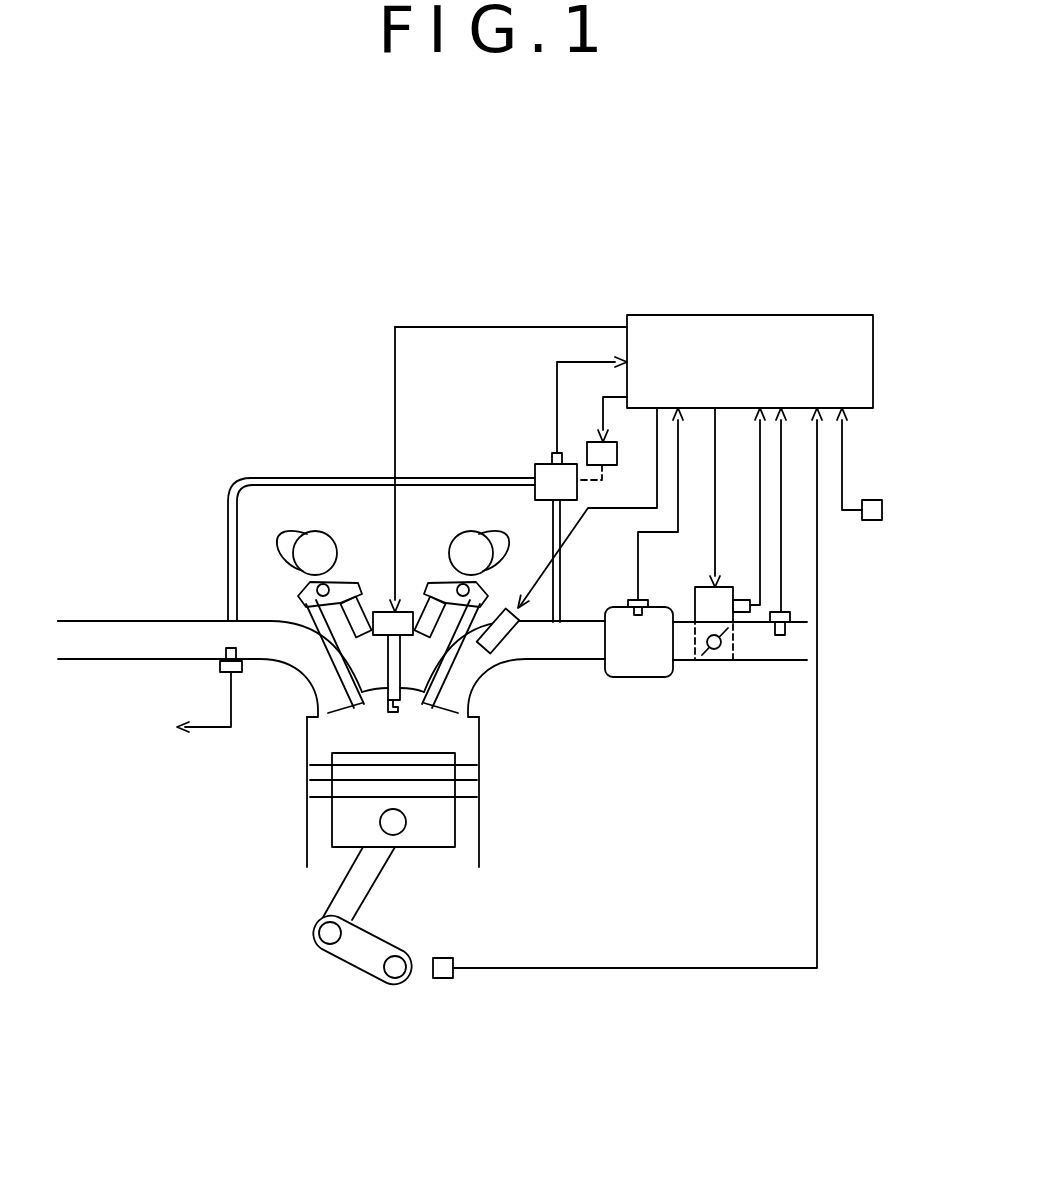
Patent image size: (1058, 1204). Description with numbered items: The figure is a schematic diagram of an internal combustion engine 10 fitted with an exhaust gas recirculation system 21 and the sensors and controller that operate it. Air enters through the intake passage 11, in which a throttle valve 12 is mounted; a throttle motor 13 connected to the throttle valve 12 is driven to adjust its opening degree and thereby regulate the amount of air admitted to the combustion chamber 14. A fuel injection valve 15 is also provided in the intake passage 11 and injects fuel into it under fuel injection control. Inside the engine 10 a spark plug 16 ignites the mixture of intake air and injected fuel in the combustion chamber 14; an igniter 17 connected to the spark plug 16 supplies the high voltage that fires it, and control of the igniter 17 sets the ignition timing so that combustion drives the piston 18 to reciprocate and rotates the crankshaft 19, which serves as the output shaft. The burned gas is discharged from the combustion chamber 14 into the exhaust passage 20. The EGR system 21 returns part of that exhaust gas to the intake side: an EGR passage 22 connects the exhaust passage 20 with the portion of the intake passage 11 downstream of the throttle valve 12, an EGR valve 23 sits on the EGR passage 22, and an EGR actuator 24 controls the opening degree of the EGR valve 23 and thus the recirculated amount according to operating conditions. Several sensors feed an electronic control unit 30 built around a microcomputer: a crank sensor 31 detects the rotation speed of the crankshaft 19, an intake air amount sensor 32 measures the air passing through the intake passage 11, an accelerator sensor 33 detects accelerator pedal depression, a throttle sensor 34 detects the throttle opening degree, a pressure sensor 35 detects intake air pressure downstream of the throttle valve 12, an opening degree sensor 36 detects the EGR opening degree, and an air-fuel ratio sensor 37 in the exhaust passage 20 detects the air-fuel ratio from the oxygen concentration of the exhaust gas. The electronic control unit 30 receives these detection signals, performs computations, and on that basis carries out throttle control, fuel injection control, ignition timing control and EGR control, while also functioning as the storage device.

The internal combustion engine 10 is at (272, 820).
The intake passage 11 is at (557, 660).
The throttle valve 12 is at (706, 653).
The throttle motor 13 is at (700, 587).
The combustion chamber 14 is at (315, 738).
The fuel injection valve 15 is at (512, 640).
The spark plug 16 is at (386, 678).
The igniter 17 is at (385, 603).
The piston 18 is at (440, 847).
The crankshaft 19 is at (402, 955).
The exhaust passage 20 is at (138, 627).
The exhaust gas recirculation system 21 is at (303, 425).
The EGR passage 22 is at (345, 477).
The EGR valve 23 is at (577, 490).
The EGR actuator 24 is at (594, 441).
The electronic control unit 30 is at (873, 330).
The crank sensor 31 is at (443, 978).
The intake air amount sensor 32 is at (790, 616).
The accelerator sensor 33 is at (870, 520).
The throttle sensor 34 is at (745, 598).
The pressure sensor 35 is at (633, 600).
The opening degree sensor 36 is at (548, 452).
The air-fuel ratio sensor 37 is at (241, 672).